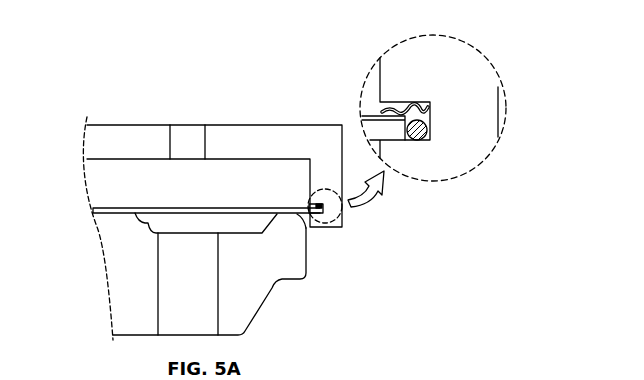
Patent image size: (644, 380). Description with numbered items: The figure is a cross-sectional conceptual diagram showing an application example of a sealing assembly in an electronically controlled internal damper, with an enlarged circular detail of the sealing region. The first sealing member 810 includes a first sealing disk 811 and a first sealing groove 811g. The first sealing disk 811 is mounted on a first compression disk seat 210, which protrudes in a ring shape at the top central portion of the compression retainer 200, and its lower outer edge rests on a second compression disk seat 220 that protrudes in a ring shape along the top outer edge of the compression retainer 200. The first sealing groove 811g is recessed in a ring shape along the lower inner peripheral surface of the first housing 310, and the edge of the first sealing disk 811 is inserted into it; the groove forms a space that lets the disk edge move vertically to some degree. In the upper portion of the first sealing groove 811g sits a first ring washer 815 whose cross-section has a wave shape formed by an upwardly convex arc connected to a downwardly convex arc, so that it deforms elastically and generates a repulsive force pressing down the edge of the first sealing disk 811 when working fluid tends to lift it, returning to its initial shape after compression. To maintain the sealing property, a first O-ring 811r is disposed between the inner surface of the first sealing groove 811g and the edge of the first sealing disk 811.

The compression retainer 200 is at (250, 301).
The first compression disk seat 210 is at (112, 220).
The second compression disk seat 220 is at (304, 224).
The first housing 310 is at (292, 133).
The first sealing member 810 is at (243, 98).
The first sealing disk 811 is at (187, 207).
The first sealing groove 811g is at (307, 205).
The first O-ring 811r is at (431, 127).
The first ring washer 815 is at (431, 104).